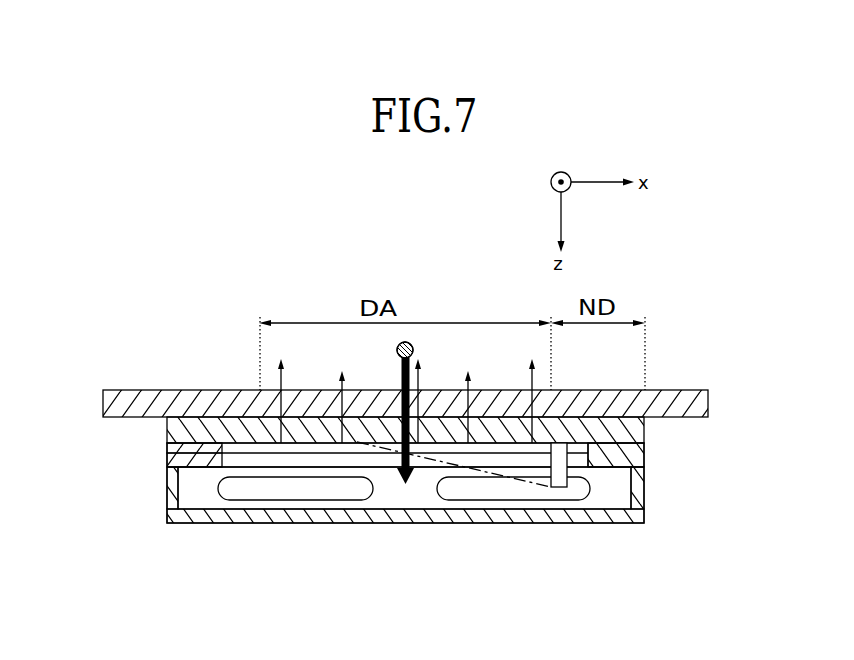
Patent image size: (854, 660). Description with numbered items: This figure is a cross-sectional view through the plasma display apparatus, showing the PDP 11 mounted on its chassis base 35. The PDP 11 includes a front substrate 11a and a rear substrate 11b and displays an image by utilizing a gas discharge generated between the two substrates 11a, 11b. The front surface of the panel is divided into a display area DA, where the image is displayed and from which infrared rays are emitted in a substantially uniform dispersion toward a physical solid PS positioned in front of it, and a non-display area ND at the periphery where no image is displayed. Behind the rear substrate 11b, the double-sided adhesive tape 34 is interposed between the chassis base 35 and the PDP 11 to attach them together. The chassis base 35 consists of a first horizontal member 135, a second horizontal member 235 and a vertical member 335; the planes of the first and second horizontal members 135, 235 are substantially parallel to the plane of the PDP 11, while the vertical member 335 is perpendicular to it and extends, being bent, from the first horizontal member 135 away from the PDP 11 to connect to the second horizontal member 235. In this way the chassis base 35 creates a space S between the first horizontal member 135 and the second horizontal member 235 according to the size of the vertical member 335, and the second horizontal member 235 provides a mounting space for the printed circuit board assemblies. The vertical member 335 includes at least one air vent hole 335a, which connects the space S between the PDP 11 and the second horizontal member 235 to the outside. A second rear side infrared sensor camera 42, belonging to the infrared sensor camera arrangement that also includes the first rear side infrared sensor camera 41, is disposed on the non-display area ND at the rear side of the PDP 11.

The PDP 11 is at (457, 422).
The front substrate 11a is at (696, 404).
The rear substrate 11b is at (646, 430).
The double-sided adhesive tape 34 is at (197, 447).
The chassis base 35 is at (342, 462).
The first horizontal member 135 is at (176, 461).
The vertical member 335 is at (362, 526).
The air vent hole 335a is at (332, 493).
The second horizontal member 235 is at (253, 517).
The second rear side infrared sensor camera 42 is at (560, 487).
The first rear side infrared sensor camera 41 is at (559, 512).
The space S is at (203, 493).
The physical solid PS is at (408, 342).